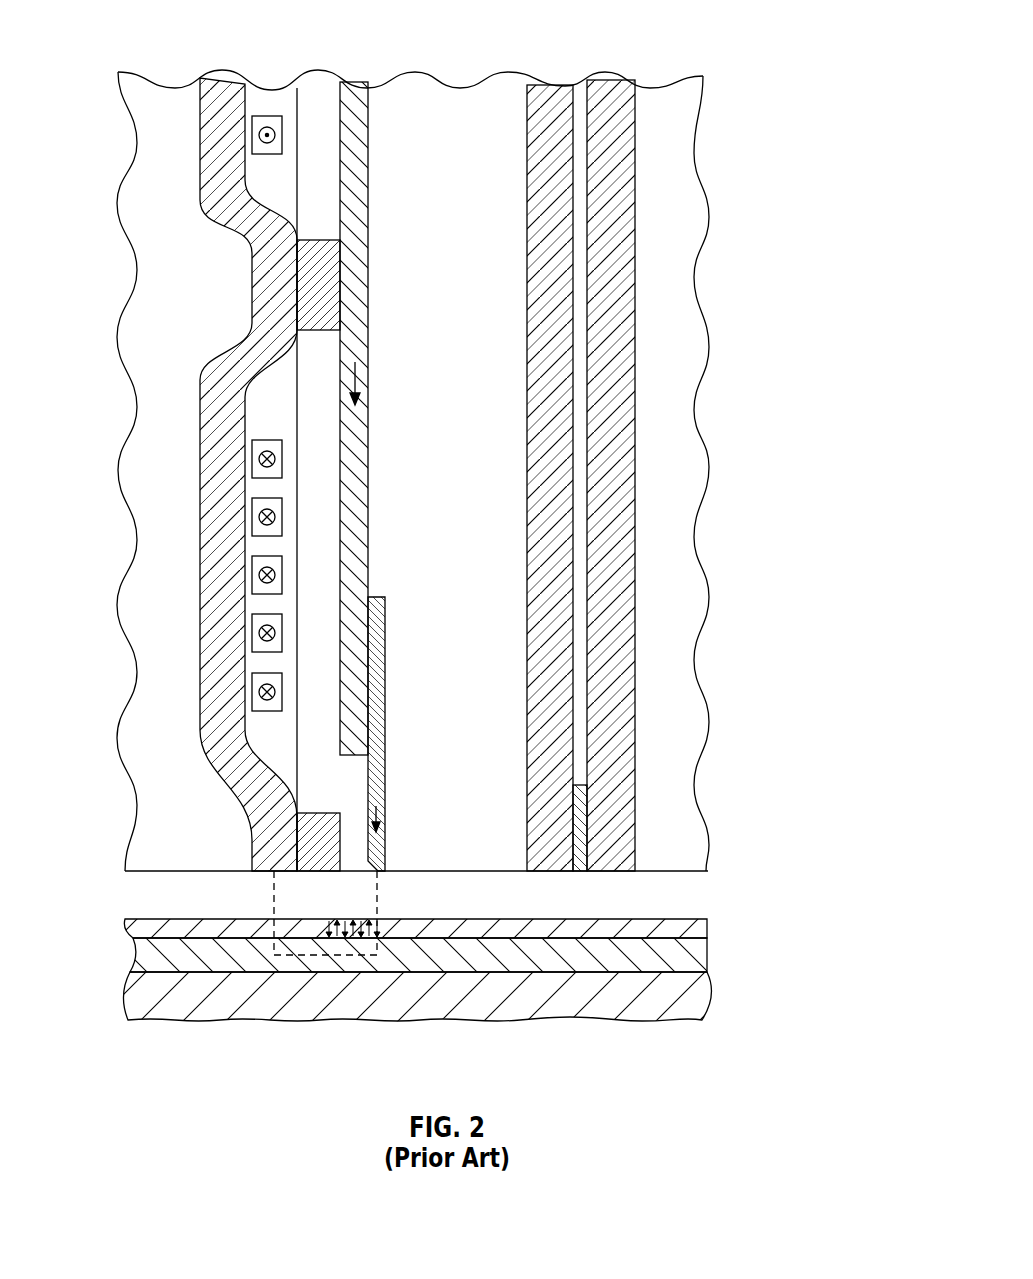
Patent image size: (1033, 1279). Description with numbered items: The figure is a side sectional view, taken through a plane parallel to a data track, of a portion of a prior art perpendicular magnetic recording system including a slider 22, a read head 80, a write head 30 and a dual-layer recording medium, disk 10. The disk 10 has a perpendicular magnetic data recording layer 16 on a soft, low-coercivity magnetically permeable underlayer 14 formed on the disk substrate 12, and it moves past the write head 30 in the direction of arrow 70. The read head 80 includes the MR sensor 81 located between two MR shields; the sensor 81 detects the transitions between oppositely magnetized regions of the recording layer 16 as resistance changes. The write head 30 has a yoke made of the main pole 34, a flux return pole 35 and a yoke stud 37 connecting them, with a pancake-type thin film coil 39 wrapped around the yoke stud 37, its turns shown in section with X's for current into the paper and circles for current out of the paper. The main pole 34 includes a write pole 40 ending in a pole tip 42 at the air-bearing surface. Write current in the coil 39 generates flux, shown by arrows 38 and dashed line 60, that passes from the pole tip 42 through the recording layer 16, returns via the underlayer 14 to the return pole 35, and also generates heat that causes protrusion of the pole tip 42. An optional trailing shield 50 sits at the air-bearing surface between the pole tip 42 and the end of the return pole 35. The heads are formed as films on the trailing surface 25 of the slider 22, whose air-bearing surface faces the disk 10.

The disk 10 is at (447, 973).
The disk substrate 12 is at (136, 1000).
The soft underlayer 14 is at (142, 954).
The perpendicular magnetic data recording layer 16 is at (146, 928).
The slider 22 is at (696, 35).
The trailing surface 25 is at (632, 286).
The write head 30 is at (200, 58).
The main pole 34 is at (357, 466).
The flux return pole 35 is at (250, 793).
The yoke stud 37 is at (320, 295).
The arrows 38 is at (358, 385).
The thin film coil 39 is at (267, 156).
The write pole 40 is at (378, 650).
The pole tip 42 is at (380, 873).
The trailing shield 50 is at (305, 815).
The dashed line 60 is at (315, 957).
The arrow 70 is at (726, 955).
The read head 80 is at (527, 55).
The MR sensor 81 is at (581, 820).